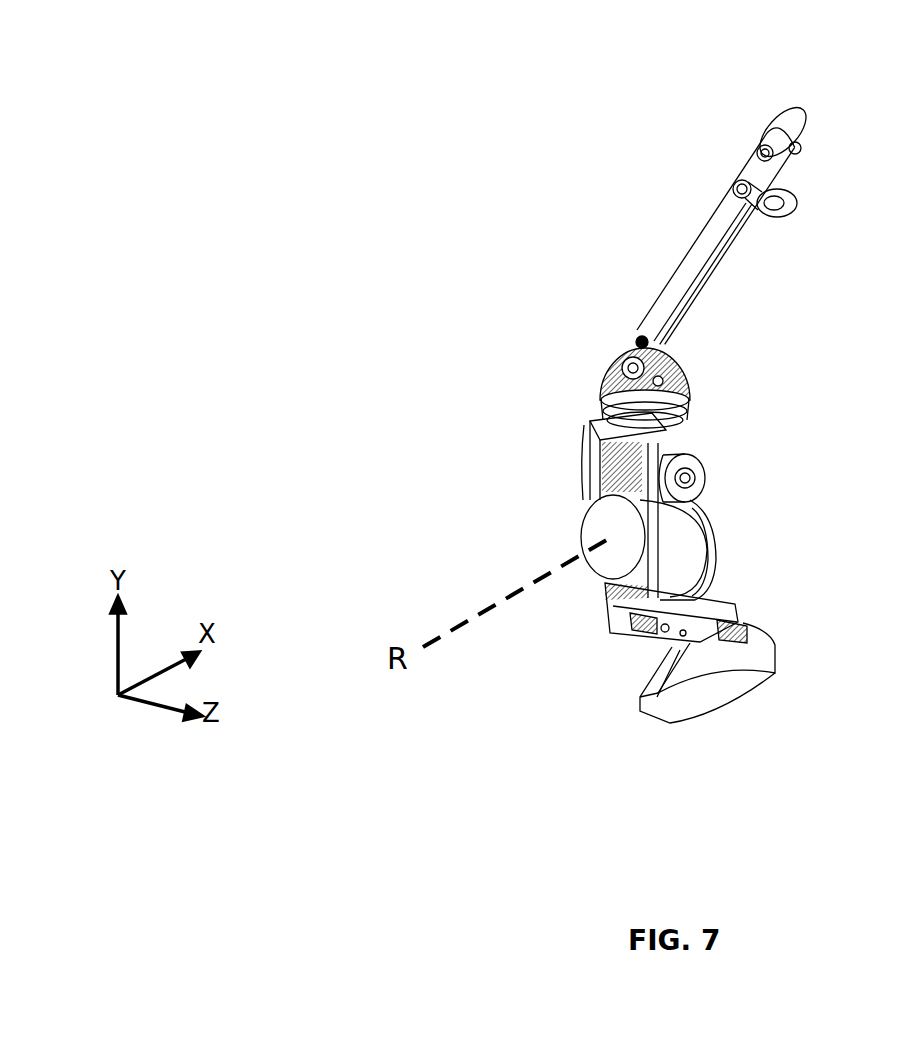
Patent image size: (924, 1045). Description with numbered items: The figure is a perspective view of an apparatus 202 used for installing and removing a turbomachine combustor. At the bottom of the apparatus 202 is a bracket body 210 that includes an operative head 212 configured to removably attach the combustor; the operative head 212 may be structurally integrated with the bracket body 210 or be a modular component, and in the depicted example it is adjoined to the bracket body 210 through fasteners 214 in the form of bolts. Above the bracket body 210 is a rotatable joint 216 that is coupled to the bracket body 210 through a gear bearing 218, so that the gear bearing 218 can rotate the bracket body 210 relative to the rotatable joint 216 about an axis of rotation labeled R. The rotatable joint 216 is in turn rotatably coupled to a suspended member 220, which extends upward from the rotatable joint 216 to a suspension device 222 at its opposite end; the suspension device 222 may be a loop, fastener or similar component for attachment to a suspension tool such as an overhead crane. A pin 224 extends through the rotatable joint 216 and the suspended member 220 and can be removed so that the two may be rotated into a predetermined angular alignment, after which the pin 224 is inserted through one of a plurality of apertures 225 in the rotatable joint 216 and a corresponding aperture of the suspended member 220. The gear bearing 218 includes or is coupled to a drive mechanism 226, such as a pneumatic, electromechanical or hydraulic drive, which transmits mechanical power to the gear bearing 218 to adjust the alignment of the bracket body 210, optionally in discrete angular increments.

The apparatus 202 is at (564, 184).
The bracket body 210 is at (613, 597).
The operative head 212 is at (675, 688).
The fasteners 214 is at (745, 630).
The rotatable joint 216 is at (622, 368).
The gear bearing 218 is at (582, 500).
The suspended member 220 is at (690, 285).
The suspension device 222 is at (792, 118).
The pin 224 is at (636, 338).
The apertures 225 is at (662, 381).
The drive mechanism 226 is at (688, 479).